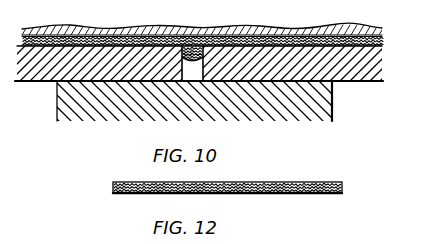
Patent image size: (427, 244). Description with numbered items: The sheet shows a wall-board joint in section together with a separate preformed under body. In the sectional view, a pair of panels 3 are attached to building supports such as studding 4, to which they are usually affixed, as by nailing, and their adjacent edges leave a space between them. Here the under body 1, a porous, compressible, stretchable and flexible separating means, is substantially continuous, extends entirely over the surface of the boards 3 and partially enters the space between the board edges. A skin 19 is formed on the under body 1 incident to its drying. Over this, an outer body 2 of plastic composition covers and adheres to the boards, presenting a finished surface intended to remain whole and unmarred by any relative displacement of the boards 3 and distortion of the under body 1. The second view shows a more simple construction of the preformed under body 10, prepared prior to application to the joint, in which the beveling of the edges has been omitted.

In FIG. 10, the under body 1 is at (250, 29).
In FIG. 10, the outer body 2 is at (137, 27).
In FIG. 10, the panels 3 is at (26, 68).
In FIG. 10, the studding 4 is at (62, 107).
In FIG. 10, the skin 19 is at (96, 30).
In FIG. 12, the preformed under body 10 is at (283, 183).